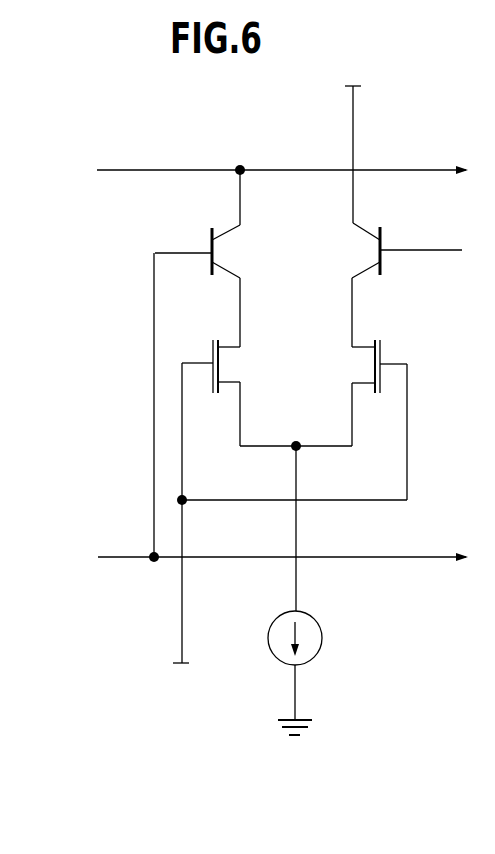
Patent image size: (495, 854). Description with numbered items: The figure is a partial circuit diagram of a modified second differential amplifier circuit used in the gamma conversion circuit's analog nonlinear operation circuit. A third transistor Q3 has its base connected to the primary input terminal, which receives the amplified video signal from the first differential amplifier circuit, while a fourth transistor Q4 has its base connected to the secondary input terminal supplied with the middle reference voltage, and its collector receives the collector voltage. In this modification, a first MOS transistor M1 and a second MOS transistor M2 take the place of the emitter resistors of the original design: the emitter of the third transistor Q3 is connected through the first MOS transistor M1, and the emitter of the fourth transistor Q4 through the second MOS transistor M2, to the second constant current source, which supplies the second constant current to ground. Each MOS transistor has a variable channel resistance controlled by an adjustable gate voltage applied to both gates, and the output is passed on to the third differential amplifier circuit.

The third transistor Q3 is at (216, 258).
The fourth transistor Q4 is at (388, 285).
The first MOS transistor M1 is at (234, 388).
The second MOS transistor M2 is at (361, 393).